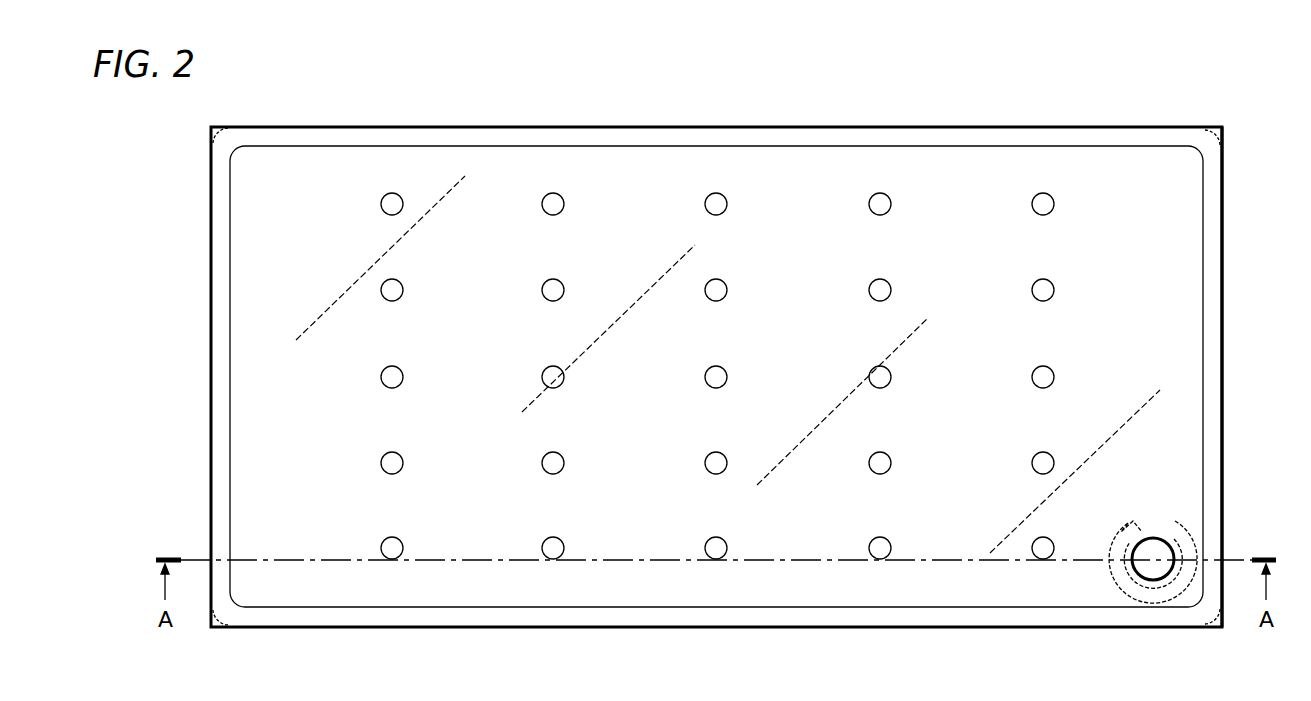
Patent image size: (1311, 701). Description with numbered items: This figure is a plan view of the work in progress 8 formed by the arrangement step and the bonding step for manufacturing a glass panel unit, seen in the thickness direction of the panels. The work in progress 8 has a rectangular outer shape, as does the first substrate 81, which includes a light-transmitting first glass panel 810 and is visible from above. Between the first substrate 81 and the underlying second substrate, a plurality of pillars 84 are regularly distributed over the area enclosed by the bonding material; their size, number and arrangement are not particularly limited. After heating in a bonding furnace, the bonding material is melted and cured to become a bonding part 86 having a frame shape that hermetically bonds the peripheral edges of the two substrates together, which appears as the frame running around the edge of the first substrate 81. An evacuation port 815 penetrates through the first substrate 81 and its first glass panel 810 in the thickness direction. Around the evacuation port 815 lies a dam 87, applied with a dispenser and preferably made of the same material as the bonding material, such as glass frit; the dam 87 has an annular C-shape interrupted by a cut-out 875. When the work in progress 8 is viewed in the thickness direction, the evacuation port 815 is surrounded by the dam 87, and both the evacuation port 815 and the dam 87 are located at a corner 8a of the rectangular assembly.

The work in progress 8 is at (932, 126).
The first substrate 81 is at (328, 173).
The first glass panel 810 is at (512, 180).
The pillars 84 is at (565, 205).
The bonding part 86 is at (1213, 291).
The corner 8a is at (1195, 527).
The dam 87 is at (1122, 577).
The cut-out 875 is at (1157, 527).
The evacuation port 815 is at (1150, 553).